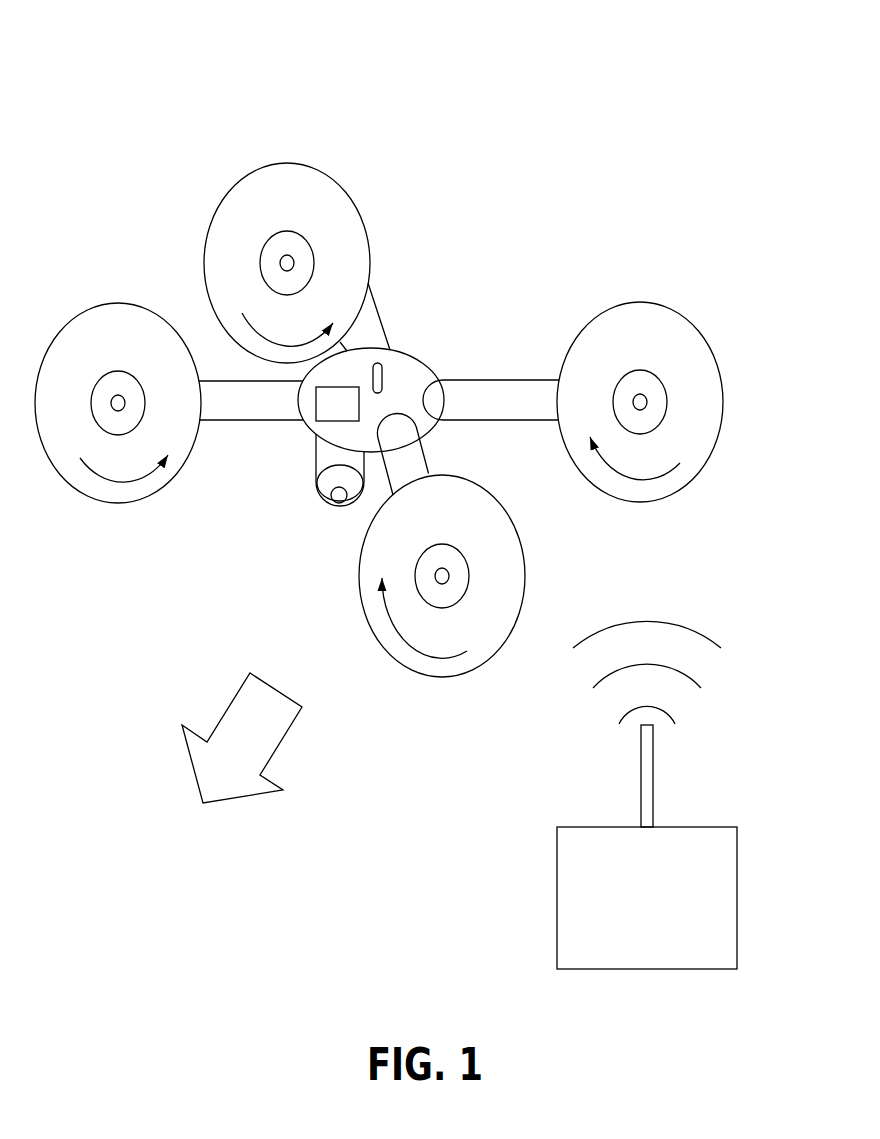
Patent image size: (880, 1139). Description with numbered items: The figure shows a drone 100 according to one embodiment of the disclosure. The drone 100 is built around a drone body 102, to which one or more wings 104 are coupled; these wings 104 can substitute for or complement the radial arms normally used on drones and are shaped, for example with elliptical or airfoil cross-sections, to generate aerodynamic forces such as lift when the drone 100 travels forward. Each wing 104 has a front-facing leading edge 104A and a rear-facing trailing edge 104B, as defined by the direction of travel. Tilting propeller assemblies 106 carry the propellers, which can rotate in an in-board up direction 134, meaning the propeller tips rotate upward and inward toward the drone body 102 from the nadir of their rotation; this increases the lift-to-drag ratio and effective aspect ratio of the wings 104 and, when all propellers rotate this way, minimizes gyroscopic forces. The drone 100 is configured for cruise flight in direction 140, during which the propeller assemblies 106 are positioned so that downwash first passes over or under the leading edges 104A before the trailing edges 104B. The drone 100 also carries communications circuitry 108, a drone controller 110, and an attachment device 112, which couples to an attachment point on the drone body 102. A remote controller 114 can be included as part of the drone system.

The drone 100 is at (152, 77).
The drone body 102 is at (433, 361).
The wings 104 is at (240, 421).
The leading edge 104A is at (214, 421).
The trailing edge 104B is at (227, 380).
The tilting propeller assemblies 106 is at (122, 298).
The communications circuitry 108 is at (390, 369).
The drone controller 110 is at (337, 404).
The attachment device 112 is at (333, 505).
The remote controller 114 is at (666, 913).
The in-board up direction 134 is at (108, 480).
The direction 140 is at (287, 738).